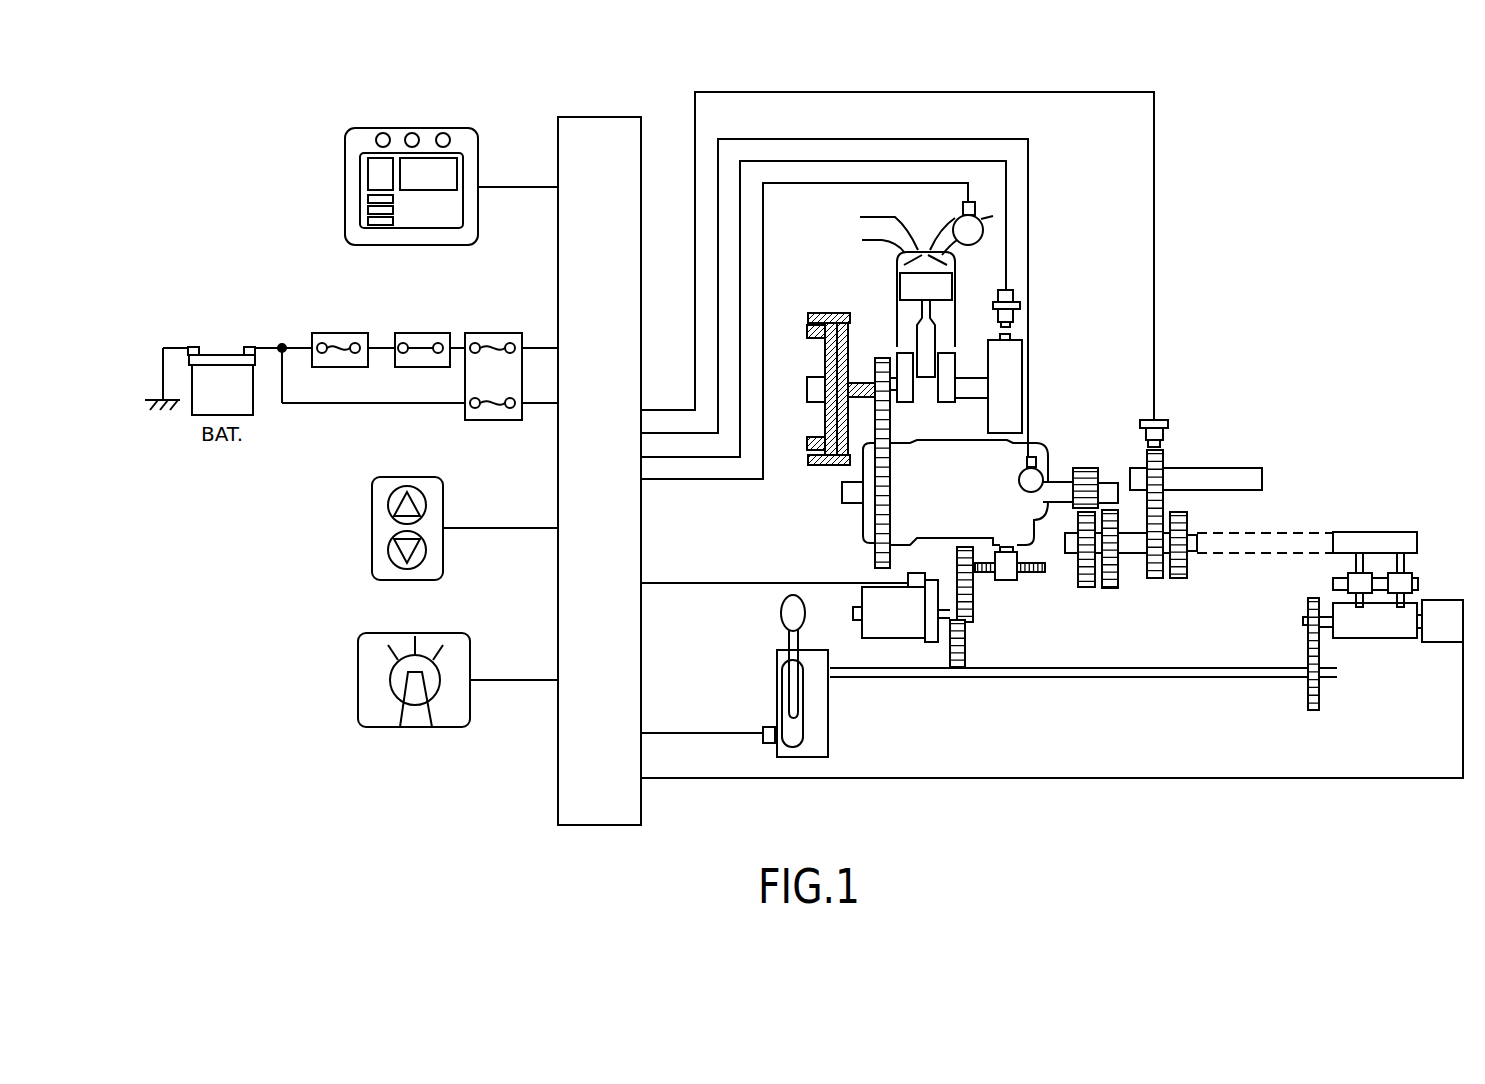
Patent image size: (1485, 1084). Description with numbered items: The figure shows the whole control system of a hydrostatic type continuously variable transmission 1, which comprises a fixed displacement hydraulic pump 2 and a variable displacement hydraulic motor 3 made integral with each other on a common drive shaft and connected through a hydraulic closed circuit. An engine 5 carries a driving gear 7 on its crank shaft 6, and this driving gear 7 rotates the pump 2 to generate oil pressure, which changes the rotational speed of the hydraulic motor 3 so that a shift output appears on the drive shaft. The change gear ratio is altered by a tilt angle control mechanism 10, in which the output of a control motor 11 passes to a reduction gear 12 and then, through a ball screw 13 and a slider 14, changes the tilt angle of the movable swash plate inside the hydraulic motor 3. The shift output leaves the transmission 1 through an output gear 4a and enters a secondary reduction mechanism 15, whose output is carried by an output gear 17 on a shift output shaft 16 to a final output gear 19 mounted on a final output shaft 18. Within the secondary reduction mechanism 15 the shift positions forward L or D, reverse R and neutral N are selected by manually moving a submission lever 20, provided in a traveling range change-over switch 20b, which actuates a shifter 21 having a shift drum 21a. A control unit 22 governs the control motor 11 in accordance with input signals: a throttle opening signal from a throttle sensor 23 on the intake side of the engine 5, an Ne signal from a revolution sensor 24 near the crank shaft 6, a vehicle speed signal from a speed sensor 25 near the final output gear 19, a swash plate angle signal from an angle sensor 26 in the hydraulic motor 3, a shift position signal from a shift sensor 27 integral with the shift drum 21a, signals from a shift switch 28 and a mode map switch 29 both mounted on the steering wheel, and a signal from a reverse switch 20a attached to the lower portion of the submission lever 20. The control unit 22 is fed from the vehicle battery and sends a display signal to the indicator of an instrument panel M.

The hydrostatic type continuously variable transmission 1 is at (836, 519).
The fixed displacement hydraulic pump 2 is at (868, 530).
The variable displacement hydraulic motor 3 is at (958, 462).
The output gear 4a is at (1085, 468).
The engine 5 is at (900, 278).
The crank shaft 6 is at (966, 385).
The driving gear 7 is at (884, 360).
The tilt angle control mechanism 10 is at (1078, 668).
The control motor 11 is at (893, 628).
The reduction gear 12 is at (965, 650).
The ball screw 13 is at (1030, 580).
The slider 14 is at (1005, 582).
The secondary reduction mechanism 15 is at (1137, 594).
The shift output shaft 16 is at (1200, 545).
The output gear 17 is at (1160, 580).
The final output shaft 18 is at (1262, 482).
The final output gear 19 is at (1165, 460).
The submission lever 20 is at (783, 618).
The reverse switch 20a is at (765, 743).
The traveling range change-over switch 20b is at (777, 685).
The shifter 21 is at (1376, 614).
The shift drum 21a is at (1400, 630).
The control unit 22 is at (592, 117).
The throttle sensor 23 is at (985, 238).
The revolution sensor 24 is at (1013, 316).
The speed sensor 25 is at (1165, 420).
The angle sensor 26 is at (1037, 457).
The shift sensor 27 is at (1440, 604).
The shift switch 28 is at (372, 525).
The mode map switch 29 is at (358, 680).
The instrument panel M is at (345, 165).